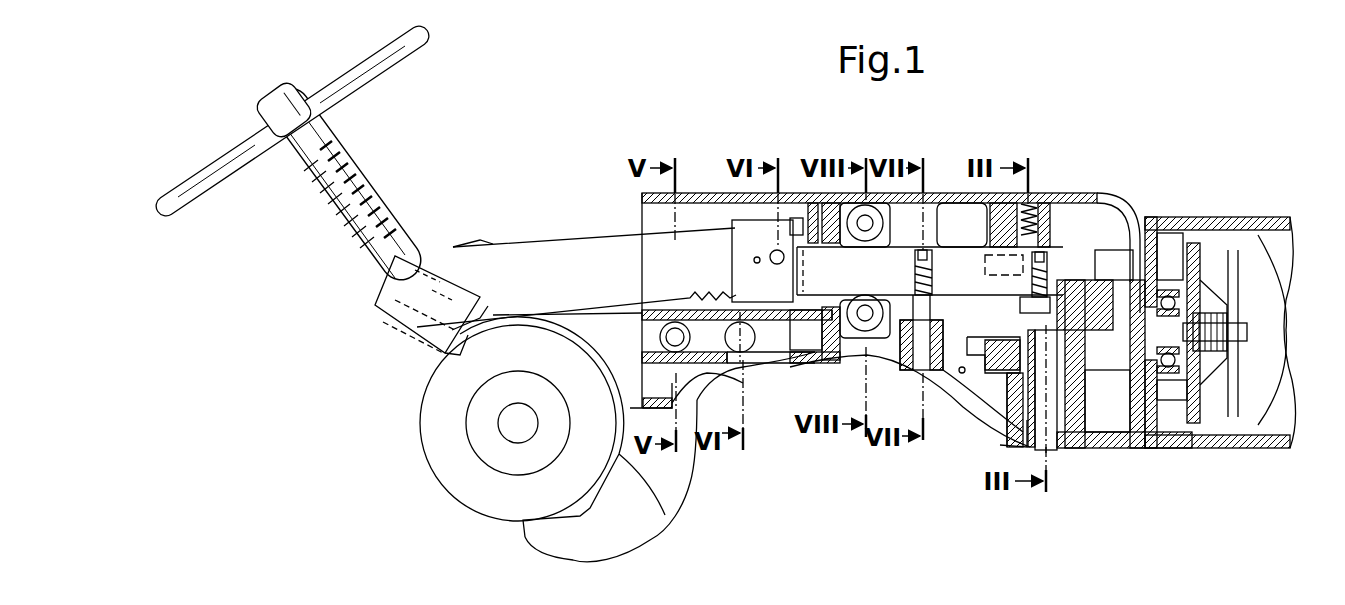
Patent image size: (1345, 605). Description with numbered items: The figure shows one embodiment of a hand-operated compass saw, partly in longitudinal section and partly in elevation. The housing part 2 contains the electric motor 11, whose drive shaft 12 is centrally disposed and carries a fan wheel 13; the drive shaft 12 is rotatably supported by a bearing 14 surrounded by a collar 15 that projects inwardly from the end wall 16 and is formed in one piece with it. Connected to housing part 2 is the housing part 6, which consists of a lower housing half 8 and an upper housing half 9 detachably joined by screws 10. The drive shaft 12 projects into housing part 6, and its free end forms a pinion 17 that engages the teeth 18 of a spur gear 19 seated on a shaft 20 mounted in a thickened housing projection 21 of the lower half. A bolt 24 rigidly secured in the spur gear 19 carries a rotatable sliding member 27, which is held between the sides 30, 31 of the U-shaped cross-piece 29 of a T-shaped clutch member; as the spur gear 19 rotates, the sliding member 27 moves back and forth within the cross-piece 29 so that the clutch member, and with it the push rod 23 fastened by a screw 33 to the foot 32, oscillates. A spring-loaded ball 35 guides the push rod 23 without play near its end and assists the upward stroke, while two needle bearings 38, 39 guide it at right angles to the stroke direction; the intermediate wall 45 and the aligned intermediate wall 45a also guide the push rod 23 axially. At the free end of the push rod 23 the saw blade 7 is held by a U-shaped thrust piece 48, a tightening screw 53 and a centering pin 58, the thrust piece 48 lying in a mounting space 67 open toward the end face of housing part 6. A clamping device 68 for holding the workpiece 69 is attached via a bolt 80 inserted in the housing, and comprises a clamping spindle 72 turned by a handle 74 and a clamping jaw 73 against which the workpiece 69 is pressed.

The housing part 2 is at (1285, 221).
The housing part 6 is at (1098, 162).
The saw blade 7 is at (540, 252).
The lower housing half 8 is at (903, 372).
The upper housing half 9 is at (940, 200).
The screws 10 is at (940, 330).
The electric motor 11 is at (1285, 365).
The drive shaft 12 is at (1213, 345).
The fan wheel 13 is at (1205, 265).
The bearing 14 is at (1163, 404).
The collar 15 is at (1210, 280).
The end wall 16 is at (1165, 256).
The pinion 17 is at (1125, 348).
The teeth 18 is at (954, 371).
The spur gear 19 is at (1000, 438).
The shaft 20 is at (1050, 430).
The thickened housing projection 21 is at (1018, 428).
The push rod 23 is at (877, 282).
The bolt 24 is at (1083, 407).
The sliding member 27 is at (1112, 290).
The cross-piece 29 is at (1082, 276).
The side 30 is at (1135, 252).
The side 31 is at (1067, 280).
The foot 32 is at (998, 295).
The screw 33 is at (1023, 267).
The ball 35 is at (1030, 205).
The needle bearing 38 is at (862, 240).
The needle bearing 39 is at (878, 335).
The intermediate wall 45 is at (822, 205).
The intermediate wall 45a is at (1083, 212).
The thrust piece 48 is at (720, 213).
The tightening screw 53 is at (770, 258).
The centering pin 58 is at (754, 260).
The mounting space 67 is at (652, 215).
The clamping device 68 is at (410, 185).
The workpiece 69 is at (440, 466).
The clamping spindle 72 is at (338, 228).
The clamping jaw 73 is at (553, 541).
The handle 74 is at (212, 195).
The bolt 80 is at (756, 338).